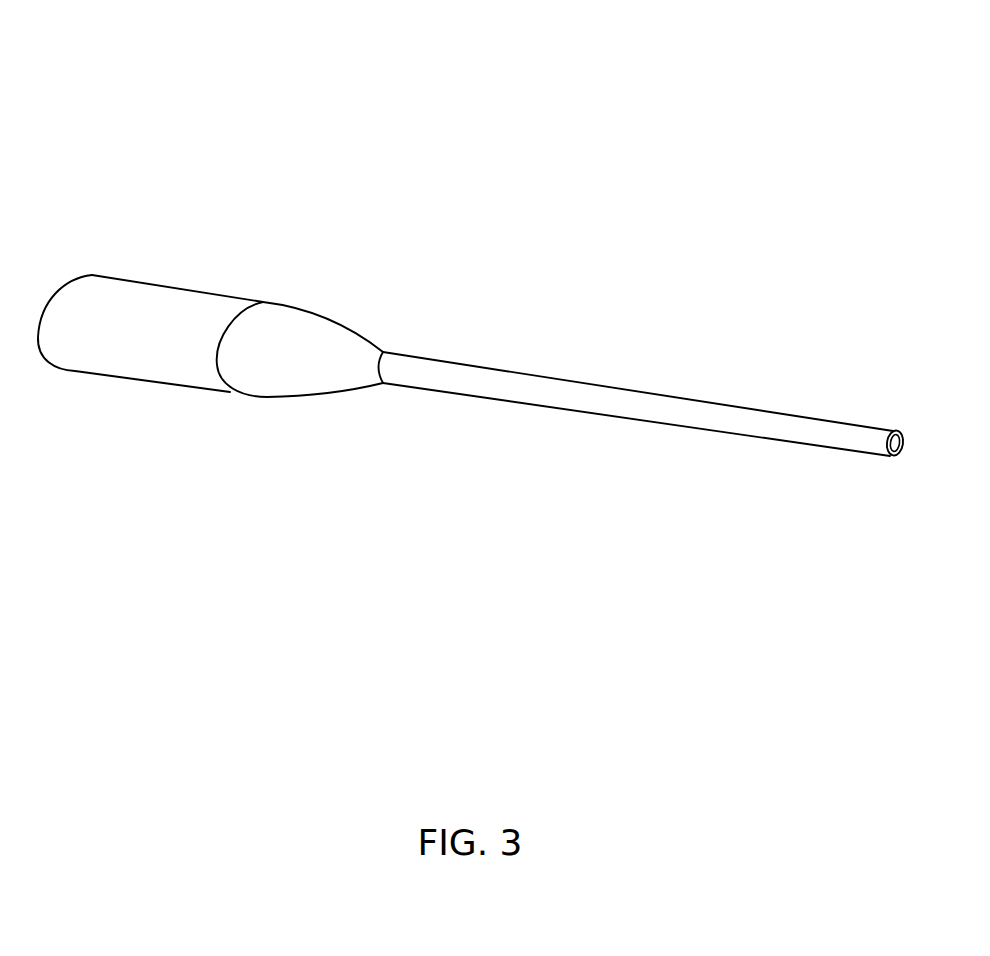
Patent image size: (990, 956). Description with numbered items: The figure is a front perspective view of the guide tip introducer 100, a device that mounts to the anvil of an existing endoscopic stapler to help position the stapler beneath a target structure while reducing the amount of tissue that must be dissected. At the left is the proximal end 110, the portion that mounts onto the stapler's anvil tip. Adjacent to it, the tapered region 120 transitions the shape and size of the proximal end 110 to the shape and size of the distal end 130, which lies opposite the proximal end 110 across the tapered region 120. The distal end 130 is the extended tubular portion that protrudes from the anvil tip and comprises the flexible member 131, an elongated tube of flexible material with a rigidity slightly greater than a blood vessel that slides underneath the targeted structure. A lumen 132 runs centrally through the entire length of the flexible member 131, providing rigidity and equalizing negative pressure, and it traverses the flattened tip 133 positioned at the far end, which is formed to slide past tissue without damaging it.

The guide tip introducer 100 is at (492, 249).
The proximal end 110 is at (225, 306).
The tapered region 120 is at (320, 328).
The distal end 130 is at (620, 387).
The flexible member 131 is at (623, 407).
The lumen 132 is at (889, 448).
The flattened tip 133 is at (902, 433).